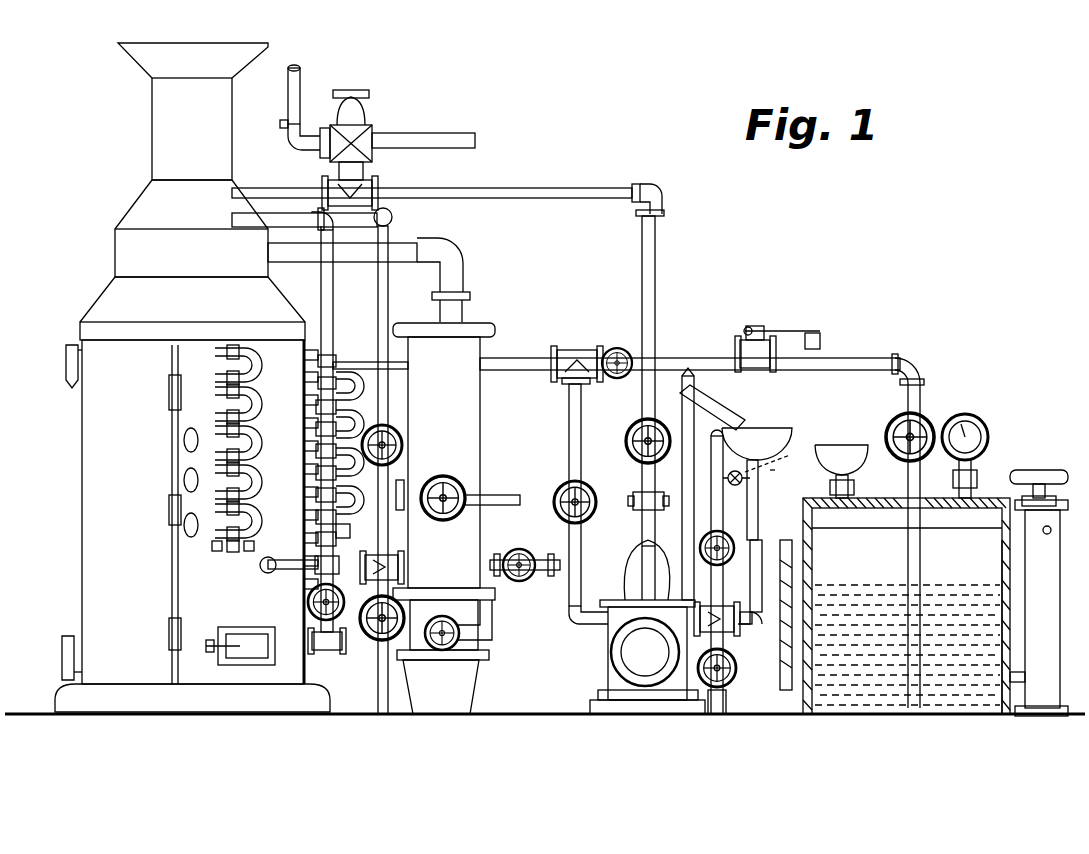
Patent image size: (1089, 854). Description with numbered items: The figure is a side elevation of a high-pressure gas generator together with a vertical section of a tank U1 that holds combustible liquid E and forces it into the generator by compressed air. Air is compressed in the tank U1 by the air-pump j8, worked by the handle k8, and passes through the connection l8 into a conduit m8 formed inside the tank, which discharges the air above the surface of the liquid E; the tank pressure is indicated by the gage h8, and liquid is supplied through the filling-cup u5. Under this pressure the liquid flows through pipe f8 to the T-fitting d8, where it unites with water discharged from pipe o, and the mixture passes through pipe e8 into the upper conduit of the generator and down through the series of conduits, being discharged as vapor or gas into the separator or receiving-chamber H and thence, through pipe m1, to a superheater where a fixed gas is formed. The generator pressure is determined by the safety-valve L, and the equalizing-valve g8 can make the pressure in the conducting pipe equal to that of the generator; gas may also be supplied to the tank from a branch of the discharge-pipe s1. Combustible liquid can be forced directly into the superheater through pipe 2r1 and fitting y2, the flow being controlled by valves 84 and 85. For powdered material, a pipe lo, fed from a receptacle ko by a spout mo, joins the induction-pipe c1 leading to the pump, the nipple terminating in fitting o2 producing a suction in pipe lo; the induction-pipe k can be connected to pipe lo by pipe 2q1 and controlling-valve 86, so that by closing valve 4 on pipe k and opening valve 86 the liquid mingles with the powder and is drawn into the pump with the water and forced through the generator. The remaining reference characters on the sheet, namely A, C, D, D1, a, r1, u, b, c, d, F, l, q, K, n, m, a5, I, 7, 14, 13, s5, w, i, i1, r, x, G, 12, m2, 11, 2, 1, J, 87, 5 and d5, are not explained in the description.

The base A is at (192, 698).
The furnace casing C is at (192, 363).
The bracket D is at (54, 658).
The upper bracket D1 is at (52, 366).
The rod couplings a is at (163, 514).
The handles r1 is at (199, 494).
The coil bends u is at (253, 443).
The coil connection b is at (259, 529).
The coil connection c is at (246, 549).
The coil connection d is at (222, 549).
The burner F is at (240, 656).
The pipe l is at (450, 355).
The pipe m1 is at (304, 420).
The pipe q is at (393, 461).
The pipe K is at (372, 280).
The safety-valve L is at (365, 135).
The pipe n is at (301, 107).
The pipe m is at (423, 129).
The valve a5 is at (363, 181).
The separator or receiving-chamber H is at (444, 491).
The funnel I is at (441, 687).
The valve 7 is at (458, 625).
The pipe e8 is at (616, 351).
The valve 14 is at (400, 445).
The valve 13 is at (443, 510).
The discharge-pipe s1 is at (492, 488).
The connection s5 is at (401, 518).
The couplings w is at (320, 469).
The coil bend i is at (350, 401).
The coil bend i1 is at (354, 453).
The coil connection r is at (352, 533).
The coupling x is at (327, 565).
The pipe G is at (286, 580).
The valve 12 is at (312, 602).
The coupling m2 is at (327, 650).
The fitting y2 is at (375, 575).
The valve 11 is at (377, 620).
The valve 85 is at (525, 575).
The T-fitting d8 is at (577, 353).
The valve 84 is at (617, 375).
The pipe o is at (588, 504).
The valve 2 is at (583, 494).
The valve 1 is at (661, 440).
The pipe 2r1 is at (611, 514).
The pump J is at (647, 627).
The pipe f8 is at (812, 519).
The equalizing-valve g8 is at (777, 334).
The valve 87 is at (915, 429).
The gage h8 is at (979, 456).
The filling-cup u5 is at (841, 459).
The handle k8 is at (1039, 476).
The liquid E is at (906, 606).
The conduit m8 is at (981, 627).
The air-pump j8 is at (903, 608).
The connection l8 is at (1031, 667).
The induction-pipe k is at (723, 572).
The valve 4 is at (725, 548).
The valve d5 is at (714, 628).
The fitting o2 is at (746, 632).
The valve 5 is at (729, 668).
The induction-pipe c1 is at (728, 700).
The controlling-valve 86 is at (736, 469).
The spout mo is at (713, 484).
The receptacle ko is at (757, 470).
The nipples or pipe 2q1 is at (772, 458).
The pipe lo is at (775, 482).
The tank U1 is at (783, 594).